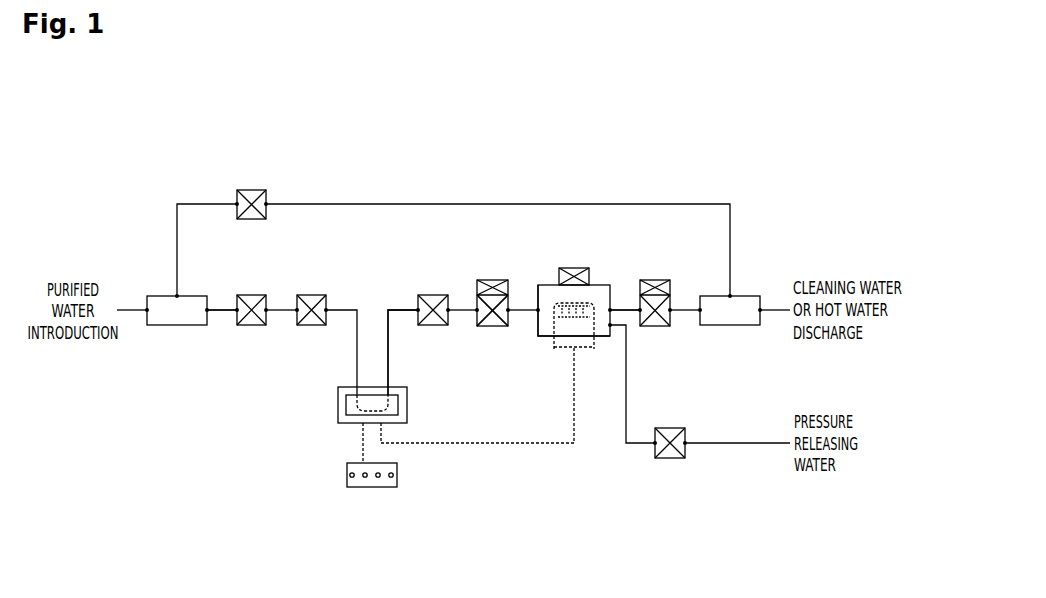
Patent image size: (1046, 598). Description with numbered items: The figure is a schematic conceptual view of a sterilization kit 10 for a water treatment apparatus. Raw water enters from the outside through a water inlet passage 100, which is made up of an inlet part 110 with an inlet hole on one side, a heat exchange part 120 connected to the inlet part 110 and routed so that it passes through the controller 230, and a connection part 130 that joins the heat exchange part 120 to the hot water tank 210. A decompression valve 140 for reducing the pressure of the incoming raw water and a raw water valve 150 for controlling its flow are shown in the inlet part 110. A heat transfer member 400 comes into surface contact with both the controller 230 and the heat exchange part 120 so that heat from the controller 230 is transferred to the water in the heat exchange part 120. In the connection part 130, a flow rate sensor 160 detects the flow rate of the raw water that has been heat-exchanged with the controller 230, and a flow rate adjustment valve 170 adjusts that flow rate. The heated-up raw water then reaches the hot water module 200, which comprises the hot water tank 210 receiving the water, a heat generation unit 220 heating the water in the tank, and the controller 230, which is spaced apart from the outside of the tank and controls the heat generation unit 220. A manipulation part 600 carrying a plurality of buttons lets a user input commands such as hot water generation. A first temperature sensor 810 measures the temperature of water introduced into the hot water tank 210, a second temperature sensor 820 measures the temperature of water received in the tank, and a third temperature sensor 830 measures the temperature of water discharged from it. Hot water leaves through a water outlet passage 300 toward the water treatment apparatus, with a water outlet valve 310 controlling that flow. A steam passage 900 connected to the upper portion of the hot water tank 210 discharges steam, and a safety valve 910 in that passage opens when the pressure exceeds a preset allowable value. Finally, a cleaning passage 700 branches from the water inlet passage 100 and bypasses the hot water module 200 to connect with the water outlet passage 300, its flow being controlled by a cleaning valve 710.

The sterilization kit 10 is at (574, 138).
The water inlet passage 100 is at (230, 345).
The inlet part 110 is at (220, 311).
The heat exchange part 120 is at (346, 400).
The connection part 130 is at (401, 311).
The decompression valve 140 is at (251, 295).
The raw water valve 150 is at (311, 295).
The flow rate sensor 160 is at (433, 295).
The flow rate adjustment valve 170 is at (493, 326).
The hot water module 200 is at (427, 489).
The hot water tank 210 is at (538, 332).
The heat generation unit 220 is at (553, 347).
The controller 230 is at (393, 423).
The water outlet passage 300 is at (624, 309).
The water outlet valve 310 is at (655, 326).
The heat transfer member 400 is at (407, 405).
The manipulation part 600 is at (372, 487).
The cleaning passage 700 is at (349, 204).
The cleaning valve 710 is at (250, 190).
The first temperature sensor 810 is at (493, 280).
The second temperature sensor 820 is at (574, 268).
The third temperature sensor 830 is at (655, 280).
The steam passage 900 is at (638, 445).
The safety valve 910 is at (670, 458).